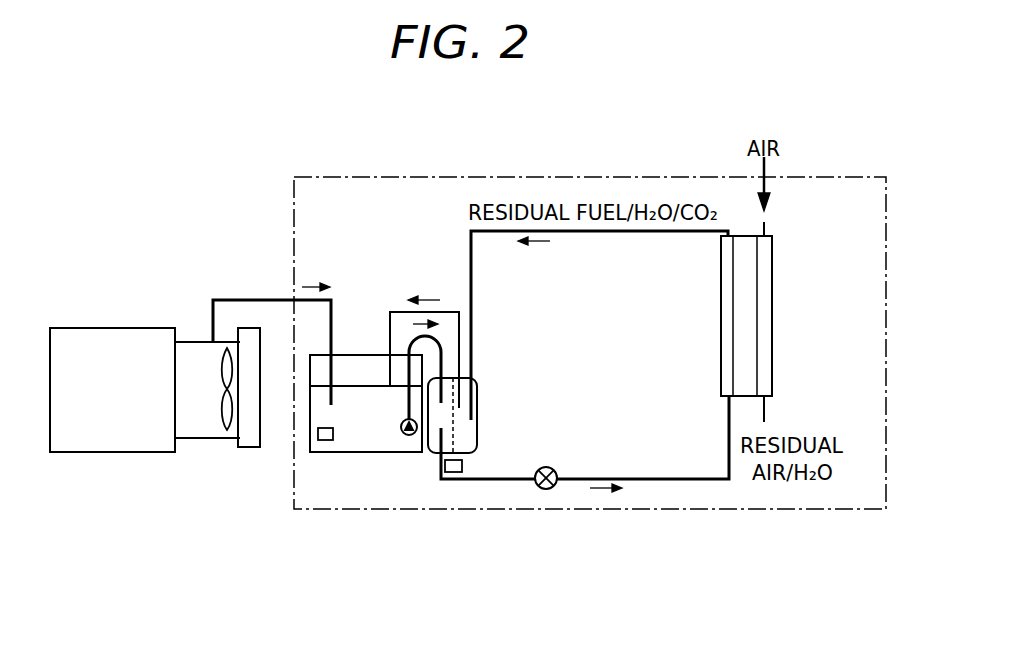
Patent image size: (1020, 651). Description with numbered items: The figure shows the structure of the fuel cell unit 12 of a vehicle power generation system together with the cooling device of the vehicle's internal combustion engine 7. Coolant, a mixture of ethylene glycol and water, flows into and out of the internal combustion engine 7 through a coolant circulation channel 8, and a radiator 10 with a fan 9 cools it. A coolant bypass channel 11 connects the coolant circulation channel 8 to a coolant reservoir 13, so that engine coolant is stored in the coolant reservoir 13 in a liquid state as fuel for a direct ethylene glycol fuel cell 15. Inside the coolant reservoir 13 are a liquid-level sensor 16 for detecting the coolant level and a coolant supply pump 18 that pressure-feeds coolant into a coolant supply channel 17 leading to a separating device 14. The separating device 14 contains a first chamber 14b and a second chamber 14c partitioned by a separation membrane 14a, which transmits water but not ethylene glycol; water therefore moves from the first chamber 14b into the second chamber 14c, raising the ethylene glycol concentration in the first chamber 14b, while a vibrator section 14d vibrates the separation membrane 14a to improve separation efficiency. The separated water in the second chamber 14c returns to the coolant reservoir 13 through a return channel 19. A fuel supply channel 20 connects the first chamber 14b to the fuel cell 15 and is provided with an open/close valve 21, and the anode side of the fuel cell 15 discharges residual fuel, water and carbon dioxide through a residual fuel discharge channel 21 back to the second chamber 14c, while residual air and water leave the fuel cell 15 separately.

The internal combustion engine 7 is at (107, 328).
The coolant circulation channel 8 is at (190, 342).
The fan 9 is at (222, 402).
The radiator 10 is at (260, 412).
The coolant bypass channel 11 is at (245, 300).
The fuel cell unit 12 is at (528, 168).
The coolant reservoir 13 is at (327, 453).
The separating device 14 is at (434, 478).
The separation membrane 14a is at (452, 433).
The first chamber 14b is at (432, 462).
The second chamber 14c is at (468, 443).
The vibrator section 14d is at (452, 475).
The fuel cell 15 is at (772, 257).
The liquid-level sensor 16 is at (318, 434).
The coolant supply channel 17 is at (445, 338).
The coolant supply pump 18 is at (401, 431).
The return channel 19 is at (400, 311).
The fuel supply channel 20 is at (655, 480).
The open/close valve 21 is at (548, 490).